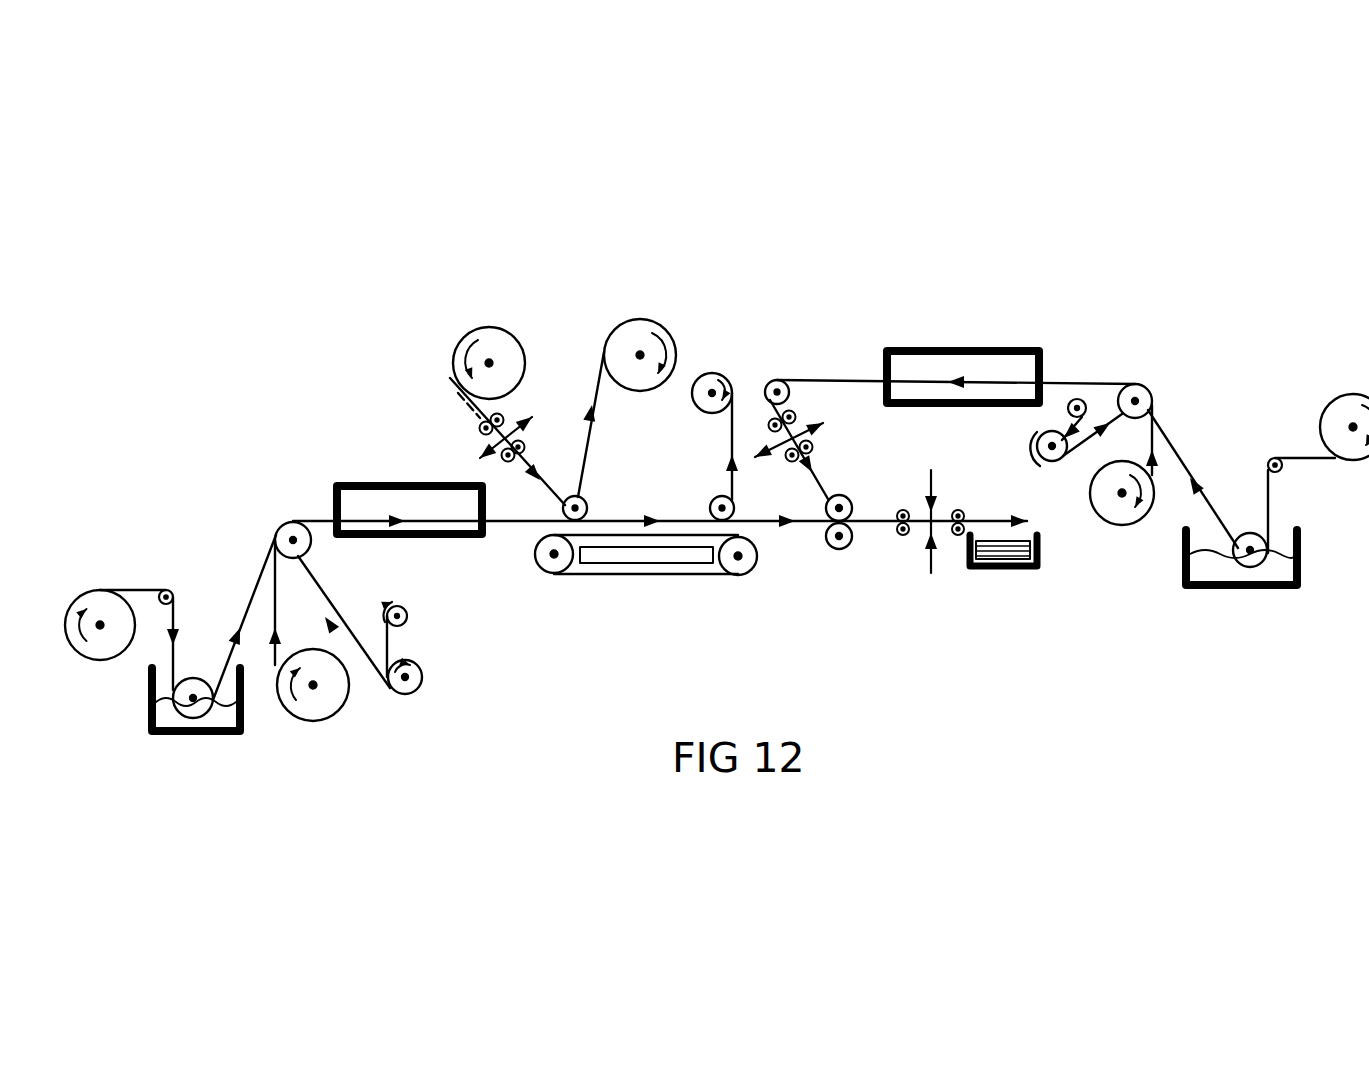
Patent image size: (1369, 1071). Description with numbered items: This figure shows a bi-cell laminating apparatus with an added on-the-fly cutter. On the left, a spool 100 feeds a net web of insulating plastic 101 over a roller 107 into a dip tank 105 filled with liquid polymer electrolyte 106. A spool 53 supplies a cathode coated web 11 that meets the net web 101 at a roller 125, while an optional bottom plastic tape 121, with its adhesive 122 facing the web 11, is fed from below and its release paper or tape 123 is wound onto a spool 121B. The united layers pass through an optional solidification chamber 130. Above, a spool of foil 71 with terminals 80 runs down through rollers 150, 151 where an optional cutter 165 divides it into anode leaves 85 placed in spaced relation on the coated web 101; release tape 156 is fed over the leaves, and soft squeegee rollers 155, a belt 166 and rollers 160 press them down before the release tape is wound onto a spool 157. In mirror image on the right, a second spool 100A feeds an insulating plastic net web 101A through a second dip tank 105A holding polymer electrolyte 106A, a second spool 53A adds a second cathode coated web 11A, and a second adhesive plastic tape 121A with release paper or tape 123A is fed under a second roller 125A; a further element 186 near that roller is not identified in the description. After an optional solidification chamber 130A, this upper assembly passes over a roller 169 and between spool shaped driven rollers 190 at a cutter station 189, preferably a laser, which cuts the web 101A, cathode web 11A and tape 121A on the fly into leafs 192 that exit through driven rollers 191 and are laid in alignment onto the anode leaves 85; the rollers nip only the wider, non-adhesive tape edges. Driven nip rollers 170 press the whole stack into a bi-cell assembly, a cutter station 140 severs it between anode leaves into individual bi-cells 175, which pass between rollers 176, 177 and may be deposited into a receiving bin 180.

The spool 100 is at (113, 590).
The net web of insulating plastic 101 is at (150, 588).
The dip tank 105 is at (150, 698).
The roller 107 is at (190, 718).
The polymer electrolyte 106 is at (238, 712).
The spool 53 is at (320, 718).
The roller 125 is at (282, 532).
The cathode coated web 11 is at (278, 640).
The adhesive 122 is at (352, 648).
The bottom plastic tape 121 is at (425, 680).
The spool 121B is at (410, 607).
The release paper or tape 123 is at (390, 643).
The solidification chamber 130 is at (336, 484).
The foil 71 is at (505, 345).
The terminals 80 is at (450, 380).
The cutter 165 is at (478, 460).
The roller 150 is at (503, 410).
The roller 151 is at (524, 442).
The anode leaves 85 is at (563, 505).
The release tape 156 is at (592, 432).
The spool 157 is at (698, 410).
The soft squeegee rollers 155 is at (553, 573).
The belt 166 is at (680, 576).
The rollers 160 is at (740, 576).
The roller 169 is at (775, 380).
The spool shaped driven rollers 190 is at (795, 418).
The spool shaped driven rollers 191 is at (815, 452).
The cutter station 189 is at (756, 462).
The leafs 192 is at (815, 488).
The nip rollers 170 is at (840, 550).
The rollers 176 is at (901, 537).
The rollers 177 is at (956, 537).
The cutter station 140 is at (947, 470).
The bi-cells 175 is at (1000, 563).
The receiving bin 180 is at (1040, 568).
The solidification chamber 130A is at (935, 347).
The roller 186 is at (1075, 398).
The second adhesive plastic tape 121A is at (1036, 432).
The release paper or tape 123A is at (1085, 432).
The second roller 125A is at (1145, 392).
The second spool 53A is at (1103, 522).
The second cathode coated web 11A is at (1156, 482).
The insulating plastic net web 101A is at (1182, 455).
The second spool 100A is at (1328, 422).
The second dip tank 105A is at (1226, 590).
The polymer electrolyte 106A is at (1275, 568).